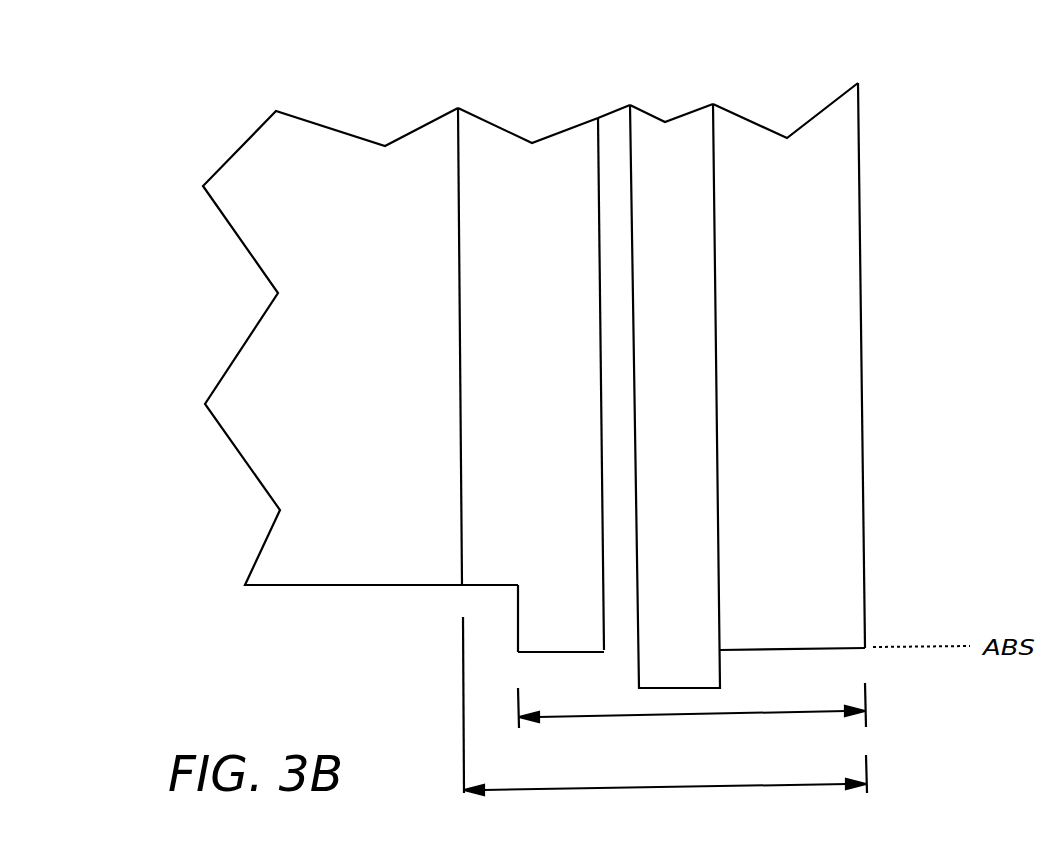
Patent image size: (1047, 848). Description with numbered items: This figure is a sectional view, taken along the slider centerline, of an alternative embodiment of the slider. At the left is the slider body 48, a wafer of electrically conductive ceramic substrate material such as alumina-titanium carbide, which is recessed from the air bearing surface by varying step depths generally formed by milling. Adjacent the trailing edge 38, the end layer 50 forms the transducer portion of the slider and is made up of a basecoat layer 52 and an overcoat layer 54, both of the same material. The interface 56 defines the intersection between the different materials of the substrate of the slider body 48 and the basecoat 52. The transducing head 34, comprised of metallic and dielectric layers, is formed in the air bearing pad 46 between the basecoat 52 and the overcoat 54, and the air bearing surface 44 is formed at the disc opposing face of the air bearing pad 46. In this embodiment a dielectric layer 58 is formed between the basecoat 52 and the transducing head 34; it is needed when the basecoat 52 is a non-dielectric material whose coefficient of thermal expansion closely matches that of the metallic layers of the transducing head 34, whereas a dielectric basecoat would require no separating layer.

The transducing head 34 is at (680, 160).
The trailing edge 38 is at (864, 520).
The air bearing surface 44 is at (778, 651).
The air bearing pad 46 is at (692, 718).
The slider body 48 is at (325, 168).
The end layer 50 is at (665, 719).
The basecoat layer 52 is at (557, 170).
The overcoat layer 54 is at (808, 160).
The interface 56 is at (462, 588).
The dielectric layer 58 is at (620, 168).